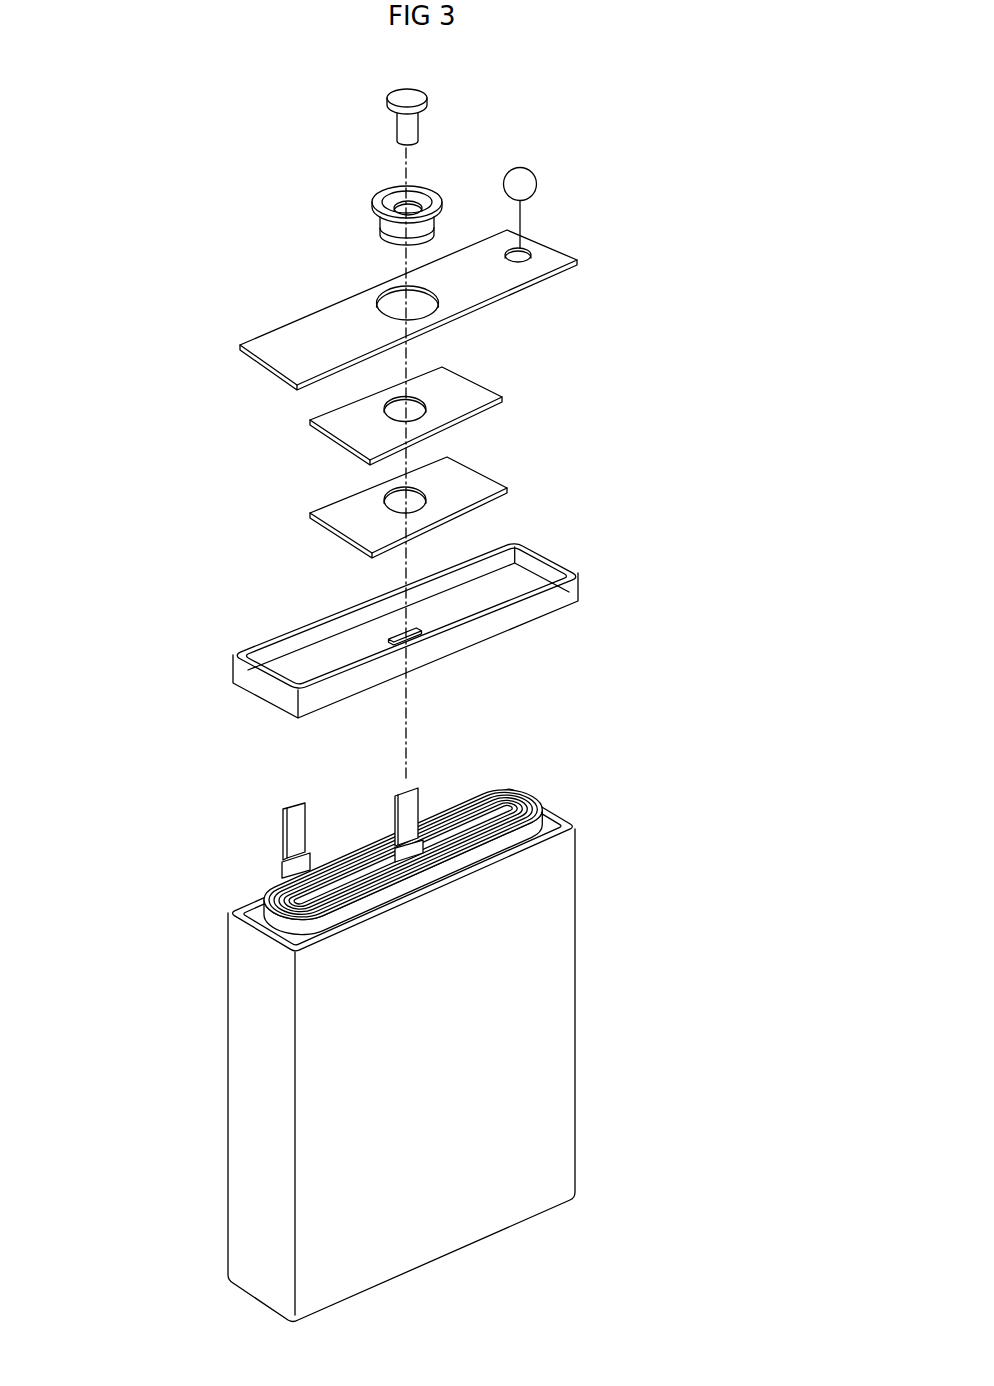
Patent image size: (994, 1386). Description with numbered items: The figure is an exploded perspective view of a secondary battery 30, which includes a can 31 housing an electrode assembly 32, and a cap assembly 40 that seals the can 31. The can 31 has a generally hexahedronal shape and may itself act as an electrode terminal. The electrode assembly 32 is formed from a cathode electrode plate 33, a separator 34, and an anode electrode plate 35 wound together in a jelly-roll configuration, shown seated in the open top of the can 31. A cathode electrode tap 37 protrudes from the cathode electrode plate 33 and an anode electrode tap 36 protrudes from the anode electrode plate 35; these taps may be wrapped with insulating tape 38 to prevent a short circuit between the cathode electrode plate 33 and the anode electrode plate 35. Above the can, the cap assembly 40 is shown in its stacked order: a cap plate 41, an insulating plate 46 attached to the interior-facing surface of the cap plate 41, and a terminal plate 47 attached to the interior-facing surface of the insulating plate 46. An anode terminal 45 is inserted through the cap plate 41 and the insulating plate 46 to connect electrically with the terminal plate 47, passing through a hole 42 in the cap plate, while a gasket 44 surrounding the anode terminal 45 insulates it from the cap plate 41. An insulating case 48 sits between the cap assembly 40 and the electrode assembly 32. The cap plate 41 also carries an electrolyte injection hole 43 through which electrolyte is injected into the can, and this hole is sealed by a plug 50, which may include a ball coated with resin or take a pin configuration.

The secondary battery 30 is at (655, 802).
The can 31 is at (555, 1007).
The electrode assembly 32 is at (517, 706).
The cathode electrode plate 33 is at (542, 805).
The separator 34 is at (528, 807).
The anode electrode plate 35 is at (513, 805).
The anode electrode tap 36 is at (397, 815).
The cathode electrode tap 37 is at (297, 837).
The insulating tape 38 is at (437, 847).
The cap assembly 40 is at (168, 233).
The cap plate 41 is at (295, 330).
The terminal hole 42 is at (387, 300).
The electrolyte injection hole 43 is at (525, 255).
The gasket 44 is at (387, 188).
The anode terminal 45 is at (397, 95).
The insulating plate 46 is at (347, 430).
The terminal plate 47 is at (348, 520).
The insulating case 48 is at (298, 662).
The plug 50 is at (520, 173).